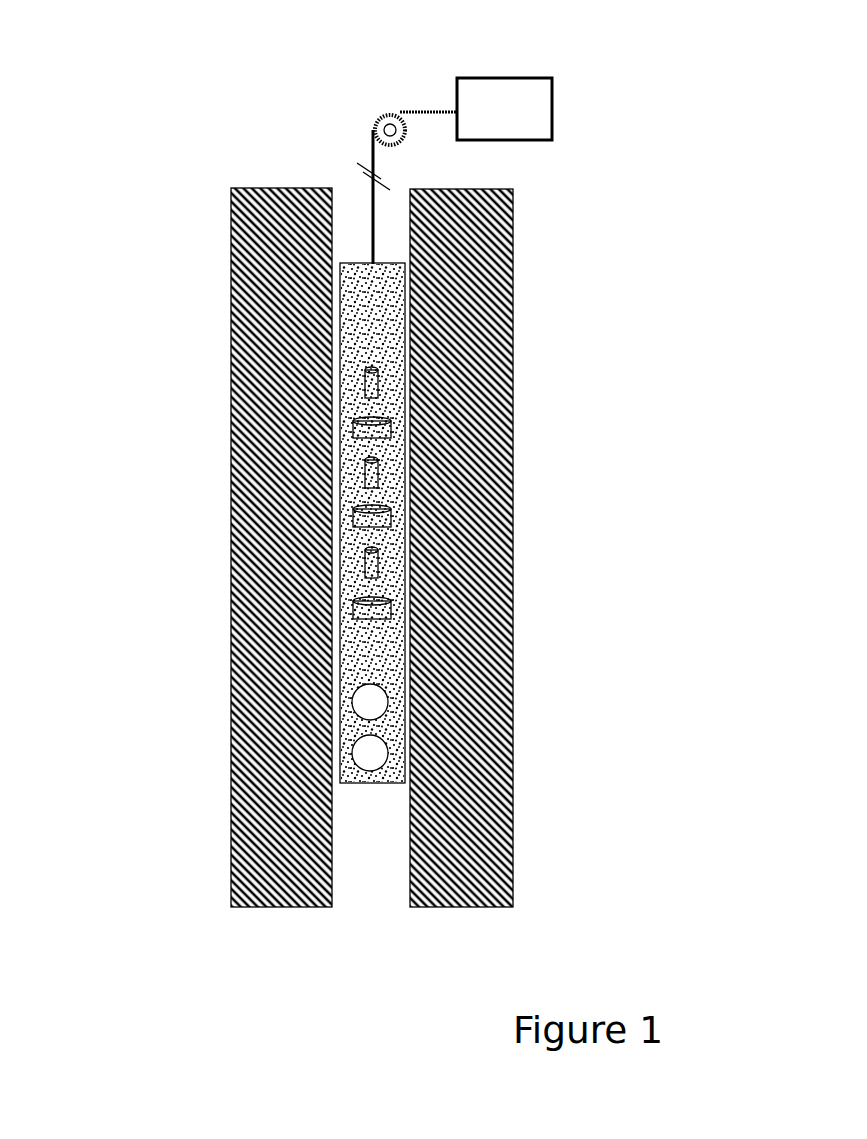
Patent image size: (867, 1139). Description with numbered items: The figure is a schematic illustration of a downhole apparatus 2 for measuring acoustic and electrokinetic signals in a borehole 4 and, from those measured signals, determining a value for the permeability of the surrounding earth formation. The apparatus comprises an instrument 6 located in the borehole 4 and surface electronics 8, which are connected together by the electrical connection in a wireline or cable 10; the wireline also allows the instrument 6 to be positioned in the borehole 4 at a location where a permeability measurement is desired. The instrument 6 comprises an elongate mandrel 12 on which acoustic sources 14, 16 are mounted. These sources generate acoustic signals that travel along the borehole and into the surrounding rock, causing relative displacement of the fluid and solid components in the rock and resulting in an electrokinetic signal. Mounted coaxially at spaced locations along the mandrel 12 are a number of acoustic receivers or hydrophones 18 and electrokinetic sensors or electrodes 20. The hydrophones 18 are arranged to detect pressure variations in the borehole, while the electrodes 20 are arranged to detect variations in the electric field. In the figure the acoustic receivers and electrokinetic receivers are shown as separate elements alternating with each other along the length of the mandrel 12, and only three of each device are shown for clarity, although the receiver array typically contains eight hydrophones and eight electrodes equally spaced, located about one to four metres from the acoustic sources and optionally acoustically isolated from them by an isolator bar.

The apparatus 2 is at (335, 121).
The borehole 4 is at (262, 425).
The instrument 6 is at (397, 292).
The surface electronics 8 is at (505, 97).
The wireline or cable 10 is at (375, 212).
The elongate mandrel 12 is at (346, 345).
The acoustic source 14 is at (355, 703).
The acoustic source 16 is at (362, 757).
The acoustic receivers or hydrophones 18 is at (375, 377).
The electrokinetic sensors or electrodes 20 is at (370, 518).